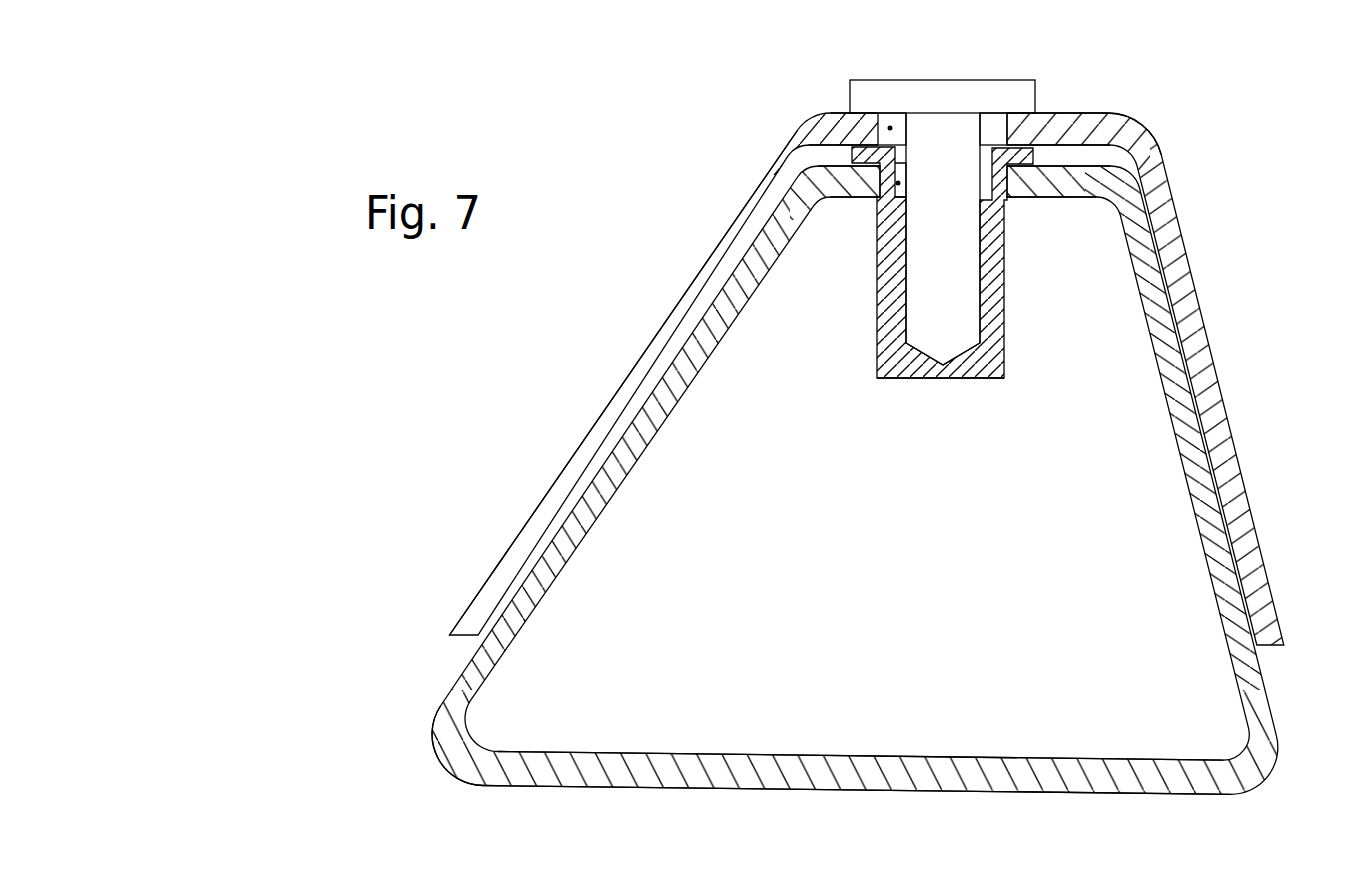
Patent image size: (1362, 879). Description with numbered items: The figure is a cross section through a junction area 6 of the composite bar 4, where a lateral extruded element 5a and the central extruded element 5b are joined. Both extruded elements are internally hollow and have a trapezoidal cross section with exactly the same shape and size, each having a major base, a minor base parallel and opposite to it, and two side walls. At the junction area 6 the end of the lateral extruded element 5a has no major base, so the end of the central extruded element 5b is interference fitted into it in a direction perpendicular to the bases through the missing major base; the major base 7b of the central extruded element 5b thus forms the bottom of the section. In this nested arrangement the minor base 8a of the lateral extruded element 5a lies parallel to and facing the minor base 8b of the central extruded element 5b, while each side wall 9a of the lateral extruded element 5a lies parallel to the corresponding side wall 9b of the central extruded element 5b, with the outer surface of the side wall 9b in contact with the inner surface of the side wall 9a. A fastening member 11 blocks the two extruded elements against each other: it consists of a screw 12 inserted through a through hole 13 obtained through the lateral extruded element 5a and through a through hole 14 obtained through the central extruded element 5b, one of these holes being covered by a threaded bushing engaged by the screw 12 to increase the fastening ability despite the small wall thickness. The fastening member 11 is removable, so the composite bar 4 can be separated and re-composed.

The composite bar 4 is at (597, 100).
The lateral extruded element 5a is at (1303, 121).
The central extruded element 5b is at (347, 727).
The junction area 6 is at (428, 338).
The major base 7b is at (858, 781).
The minor base 8a is at (1088, 129).
The minor base 8b is at (1070, 184).
The side wall 9a is at (640, 385).
The side wall 9b is at (650, 432).
The fastening member 11 is at (924, 433).
The screw 12 is at (940, 97).
The through hole 13 is at (890, 124).
The through hole 14 is at (893, 200).